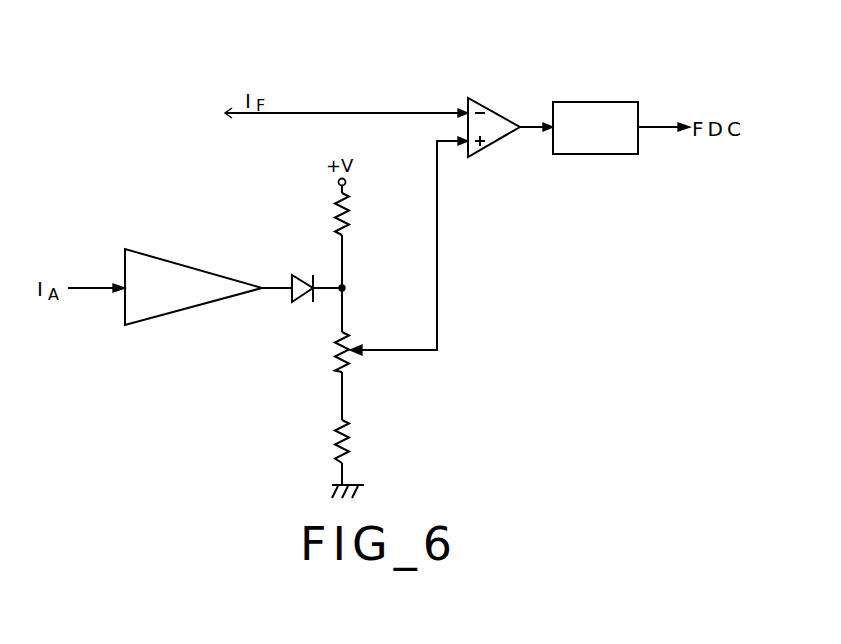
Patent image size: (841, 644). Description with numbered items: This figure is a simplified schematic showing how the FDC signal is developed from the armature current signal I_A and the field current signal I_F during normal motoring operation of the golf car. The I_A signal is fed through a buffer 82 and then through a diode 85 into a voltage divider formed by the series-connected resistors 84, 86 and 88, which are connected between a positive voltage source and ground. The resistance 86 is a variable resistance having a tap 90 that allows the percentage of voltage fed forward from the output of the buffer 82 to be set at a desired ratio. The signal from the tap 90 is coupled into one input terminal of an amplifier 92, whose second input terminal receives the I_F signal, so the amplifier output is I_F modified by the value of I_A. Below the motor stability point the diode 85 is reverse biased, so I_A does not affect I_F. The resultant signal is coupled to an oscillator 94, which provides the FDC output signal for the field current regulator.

The buffer 82 is at (178, 262).
The resistor 84 is at (348, 226).
The diode 85 is at (308, 282).
The variable resistance 86 is at (336, 347).
The resistor 88 is at (338, 438).
The tap 90 is at (370, 352).
The amplifier 92 is at (493, 108).
The oscillator 94 is at (592, 100).